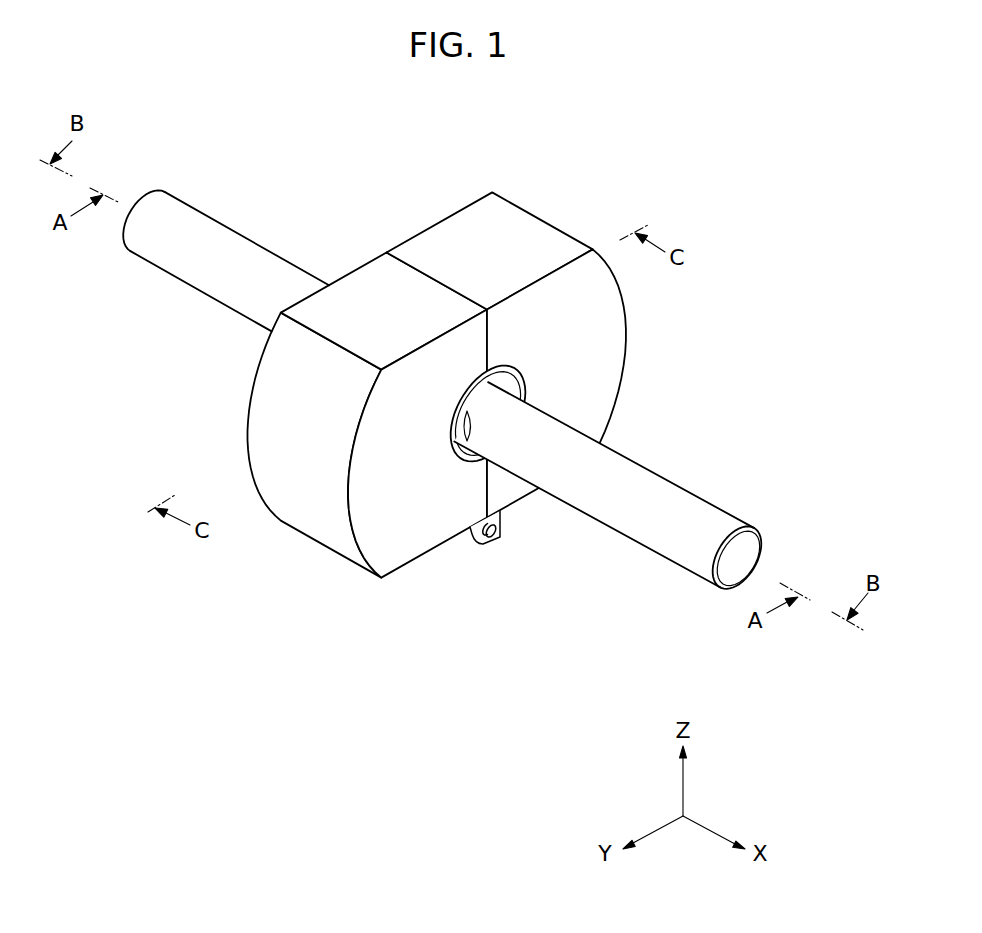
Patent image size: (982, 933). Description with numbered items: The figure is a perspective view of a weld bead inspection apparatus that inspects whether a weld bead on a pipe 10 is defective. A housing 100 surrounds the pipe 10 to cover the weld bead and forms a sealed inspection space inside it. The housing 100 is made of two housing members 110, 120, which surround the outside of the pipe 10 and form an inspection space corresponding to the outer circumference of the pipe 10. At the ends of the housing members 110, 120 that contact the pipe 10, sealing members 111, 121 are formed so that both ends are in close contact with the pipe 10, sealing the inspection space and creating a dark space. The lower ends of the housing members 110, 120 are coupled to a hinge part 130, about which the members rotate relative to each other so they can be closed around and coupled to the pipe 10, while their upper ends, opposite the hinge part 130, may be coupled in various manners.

The pipe 10 is at (733, 497).
The housing 100 is at (493, 342).
The housing member 110 is at (560, 325).
The sealing member 111 is at (513, 380).
The housing member 120 is at (370, 302).
The sealing member 121 is at (467, 455).
The hinge part 130 is at (506, 546).